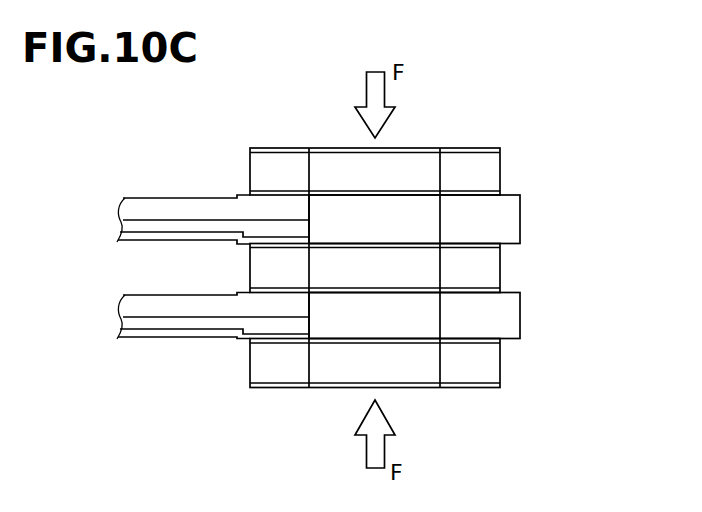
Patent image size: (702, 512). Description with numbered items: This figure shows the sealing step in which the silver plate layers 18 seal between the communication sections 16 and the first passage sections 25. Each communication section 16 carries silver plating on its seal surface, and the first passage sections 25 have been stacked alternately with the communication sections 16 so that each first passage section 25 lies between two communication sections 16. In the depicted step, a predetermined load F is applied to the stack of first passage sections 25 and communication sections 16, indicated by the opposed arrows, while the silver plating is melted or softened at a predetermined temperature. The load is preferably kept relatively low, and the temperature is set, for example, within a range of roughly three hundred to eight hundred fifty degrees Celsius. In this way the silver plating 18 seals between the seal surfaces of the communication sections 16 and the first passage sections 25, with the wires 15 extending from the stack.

The electric wire 15 is at (138, 197).
The communication section 16 is at (280, 165).
The silver plate layer 18 is at (485, 193).
The first passage section 25 is at (513, 218).